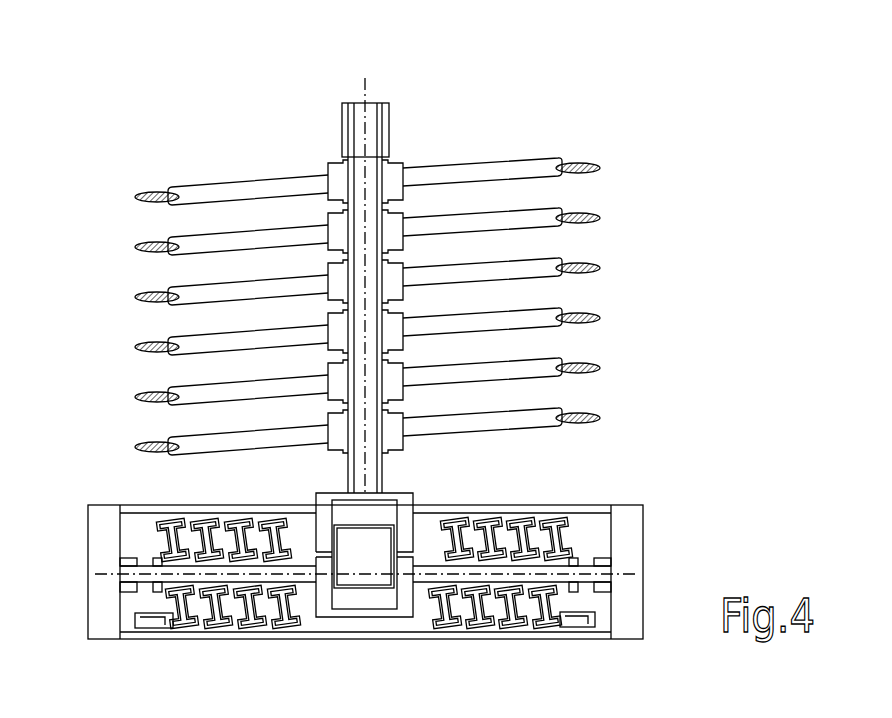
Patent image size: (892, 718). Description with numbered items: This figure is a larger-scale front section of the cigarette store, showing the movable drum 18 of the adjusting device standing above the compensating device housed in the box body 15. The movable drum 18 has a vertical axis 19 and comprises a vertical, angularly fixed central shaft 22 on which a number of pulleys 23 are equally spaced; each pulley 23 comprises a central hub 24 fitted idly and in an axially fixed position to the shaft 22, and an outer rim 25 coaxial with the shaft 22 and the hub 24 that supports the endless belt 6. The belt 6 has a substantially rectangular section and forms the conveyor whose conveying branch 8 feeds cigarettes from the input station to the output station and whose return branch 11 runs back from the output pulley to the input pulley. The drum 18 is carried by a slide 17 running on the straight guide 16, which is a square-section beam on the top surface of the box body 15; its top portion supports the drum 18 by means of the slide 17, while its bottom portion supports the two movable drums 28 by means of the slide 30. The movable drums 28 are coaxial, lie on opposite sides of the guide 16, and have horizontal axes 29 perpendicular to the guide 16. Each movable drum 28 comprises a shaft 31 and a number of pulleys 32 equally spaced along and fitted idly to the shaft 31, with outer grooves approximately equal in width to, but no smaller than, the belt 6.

The endless belt 6 is at (600, 172).
The conveying branch 8 is at (670, 225).
The return branch 11 is at (115, 657).
The box body 15 is at (600, 638).
The straight guide 16 is at (376, 592).
The slide 17 is at (416, 498).
The movable drum 18 is at (448, 98).
The vertical axis 19 is at (360, 98).
The central shaft 22 is at (384, 103).
The pulleys 23 is at (256, 168).
The central hub 24 is at (398, 170).
The outer rim 25 is at (290, 182).
The movable drums 28 is at (183, 648).
The horizontal axes 29 is at (120, 578).
The slide 30 is at (320, 612).
The shaft 31 is at (125, 570).
The pulleys 32 is at (178, 524).